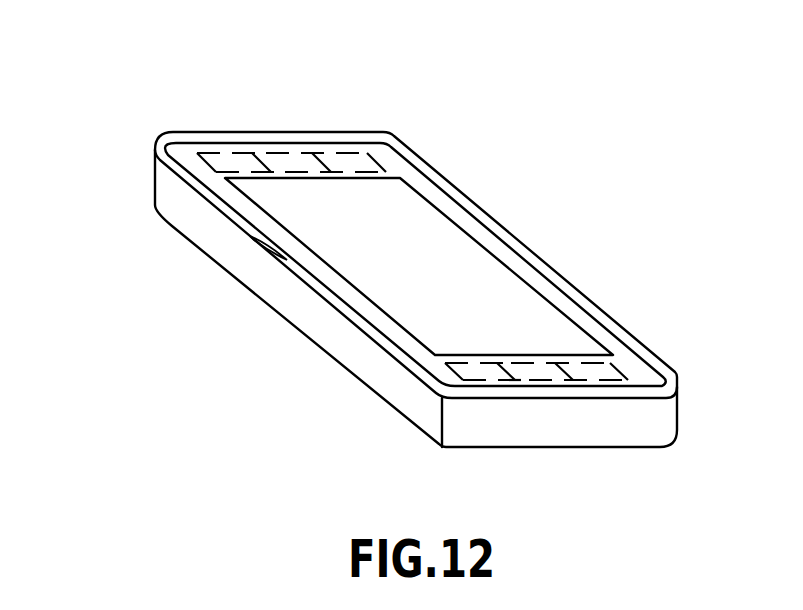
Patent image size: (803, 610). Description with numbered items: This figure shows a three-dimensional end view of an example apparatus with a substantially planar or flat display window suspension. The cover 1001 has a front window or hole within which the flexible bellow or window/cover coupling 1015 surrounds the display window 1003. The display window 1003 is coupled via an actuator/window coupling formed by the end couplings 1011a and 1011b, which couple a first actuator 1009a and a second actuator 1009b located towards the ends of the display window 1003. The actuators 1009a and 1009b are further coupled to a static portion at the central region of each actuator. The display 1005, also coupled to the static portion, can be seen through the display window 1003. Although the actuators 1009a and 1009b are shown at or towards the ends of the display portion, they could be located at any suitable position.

The cover 1001 is at (377, 367).
The display window 1003 is at (468, 223).
The display 1005 is at (525, 323).
The first actuator 1009a is at (482, 368).
The second actuator 1009b is at (232, 160).
The end coupling 1011a is at (597, 368).
The end coupling 1011b is at (355, 160).
The window/cover coupling 1015 is at (250, 237).